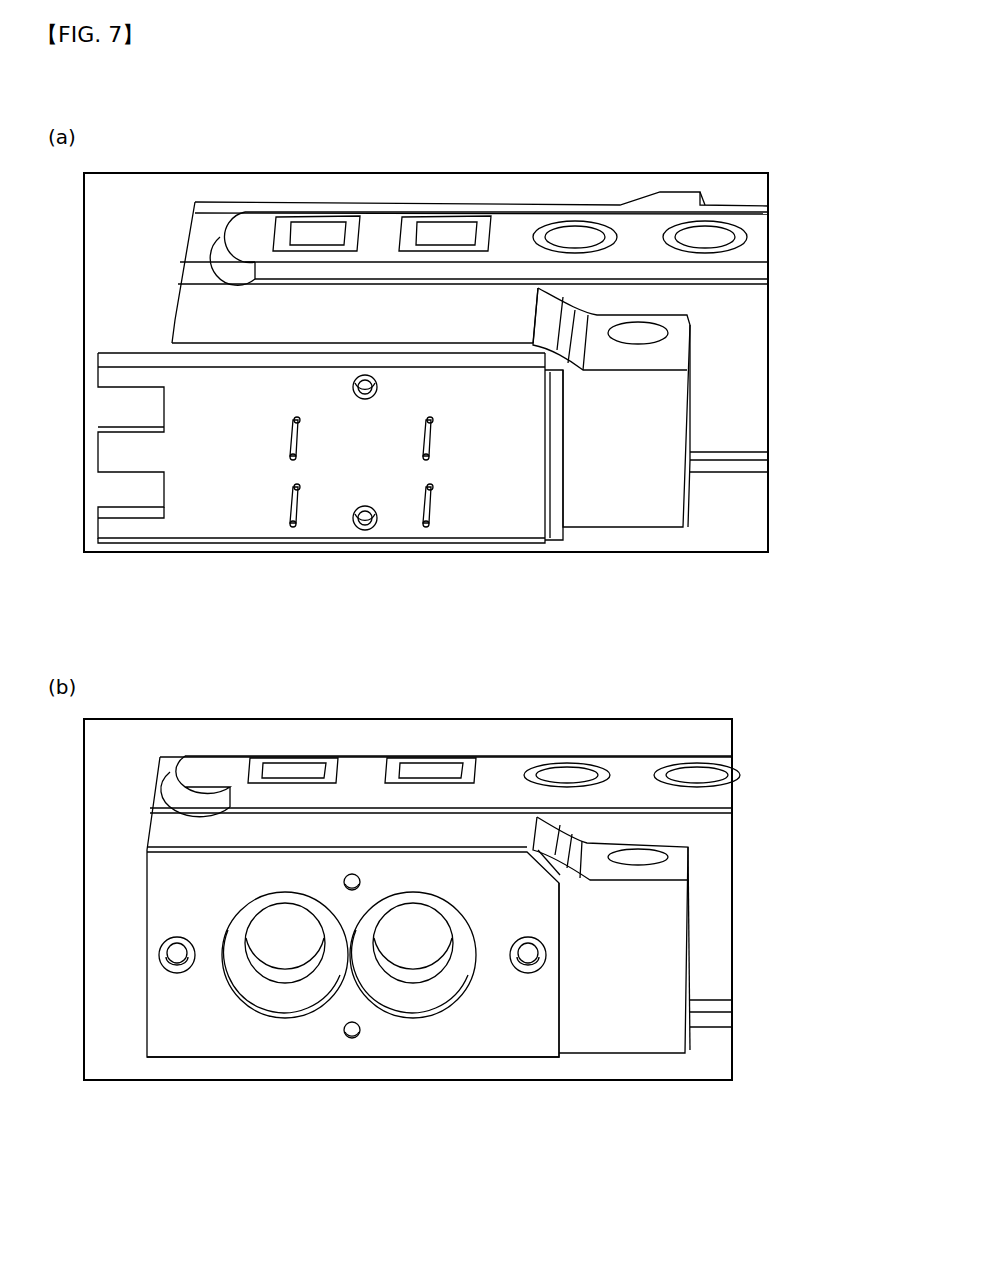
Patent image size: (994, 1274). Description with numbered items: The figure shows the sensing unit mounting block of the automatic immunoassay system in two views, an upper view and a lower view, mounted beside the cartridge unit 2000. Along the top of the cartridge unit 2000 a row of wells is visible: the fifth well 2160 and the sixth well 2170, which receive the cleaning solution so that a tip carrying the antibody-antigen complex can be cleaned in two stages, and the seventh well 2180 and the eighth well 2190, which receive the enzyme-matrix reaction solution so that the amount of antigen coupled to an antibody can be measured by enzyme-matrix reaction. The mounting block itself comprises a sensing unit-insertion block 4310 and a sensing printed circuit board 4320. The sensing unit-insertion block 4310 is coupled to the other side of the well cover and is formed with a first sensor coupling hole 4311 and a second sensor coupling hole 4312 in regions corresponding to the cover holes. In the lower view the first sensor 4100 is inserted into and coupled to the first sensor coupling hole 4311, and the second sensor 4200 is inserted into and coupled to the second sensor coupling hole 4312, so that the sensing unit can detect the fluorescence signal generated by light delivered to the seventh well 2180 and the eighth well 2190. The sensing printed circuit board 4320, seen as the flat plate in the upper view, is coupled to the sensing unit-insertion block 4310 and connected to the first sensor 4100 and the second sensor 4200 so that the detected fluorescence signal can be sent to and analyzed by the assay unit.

The cartridge unit 2000 is at (237, 232).
The eighth well 2190 is at (323, 232).
The seventh well 2180 is at (448, 233).
The sixth well 2170 is at (572, 235).
The fifth well 2160 is at (700, 235).
The sensing unit-insertion block 4310 is at (645, 355).
The sensing printed circuit board 4320 is at (503, 452).
The second sensor 4200 is at (296, 935).
The first sensor 4100 is at (425, 935).
The second sensor coupling hole 4312 is at (305, 995).
The first sensor coupling hole 4311 is at (455, 985).